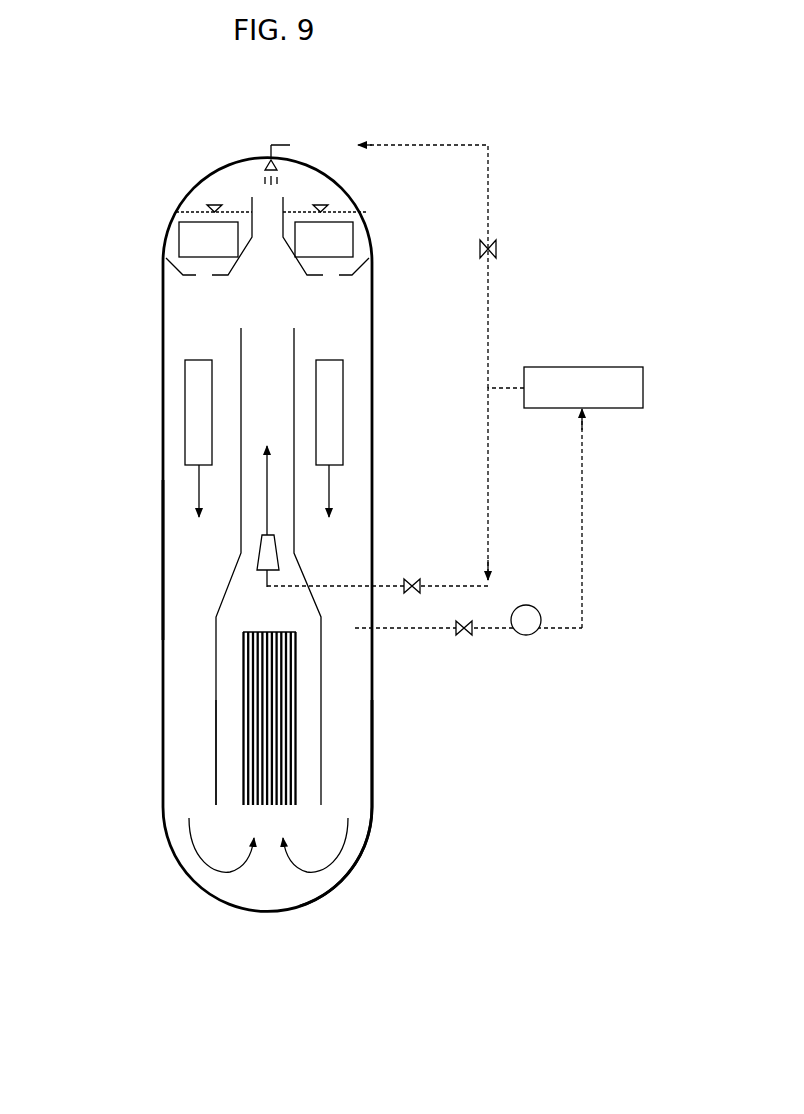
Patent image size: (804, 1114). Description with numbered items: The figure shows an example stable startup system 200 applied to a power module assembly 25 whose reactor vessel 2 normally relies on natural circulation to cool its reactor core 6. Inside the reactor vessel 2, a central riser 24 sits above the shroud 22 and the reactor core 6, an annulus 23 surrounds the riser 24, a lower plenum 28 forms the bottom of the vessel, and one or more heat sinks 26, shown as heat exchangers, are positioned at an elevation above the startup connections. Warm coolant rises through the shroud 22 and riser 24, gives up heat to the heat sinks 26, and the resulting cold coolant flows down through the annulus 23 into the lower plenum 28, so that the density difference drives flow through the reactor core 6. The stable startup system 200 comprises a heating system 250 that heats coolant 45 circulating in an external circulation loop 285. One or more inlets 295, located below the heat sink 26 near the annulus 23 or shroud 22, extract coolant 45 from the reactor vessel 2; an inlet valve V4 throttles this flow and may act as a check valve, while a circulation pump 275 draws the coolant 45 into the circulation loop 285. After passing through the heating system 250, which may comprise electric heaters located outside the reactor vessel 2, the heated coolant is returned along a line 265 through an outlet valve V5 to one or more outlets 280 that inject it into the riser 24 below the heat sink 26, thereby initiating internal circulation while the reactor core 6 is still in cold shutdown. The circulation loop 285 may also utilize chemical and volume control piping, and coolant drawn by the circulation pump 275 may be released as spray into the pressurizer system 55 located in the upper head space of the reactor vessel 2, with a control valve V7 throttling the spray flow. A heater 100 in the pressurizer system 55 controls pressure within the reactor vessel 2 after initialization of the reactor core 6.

The reactor vessel 2 is at (217, 908).
The reactor core 6 is at (308, 765).
The shroud 22 is at (203, 755).
The annulus 23 is at (177, 572).
The riser 24 is at (233, 355).
The power module assembly 25 is at (386, 855).
The heat sink 26 is at (178, 398).
The lower plenum 28 is at (232, 890).
The coolant 45 is at (318, 873).
The pressurizer system 55 is at (159, 211).
The heater 100 is at (175, 247).
The stable startup system 200 is at (549, 271).
The heating system 250 is at (552, 365).
The spray supply line 265 is at (337, 583).
The circulation pump 275 is at (540, 635).
The outlet 280 is at (253, 574).
The circulation loop 285 is at (571, 533).
The inlet 295 is at (357, 635).
The inlet valve V4 is at (470, 640).
The outlet valve V5 is at (418, 578).
The control valve V7 is at (477, 255).